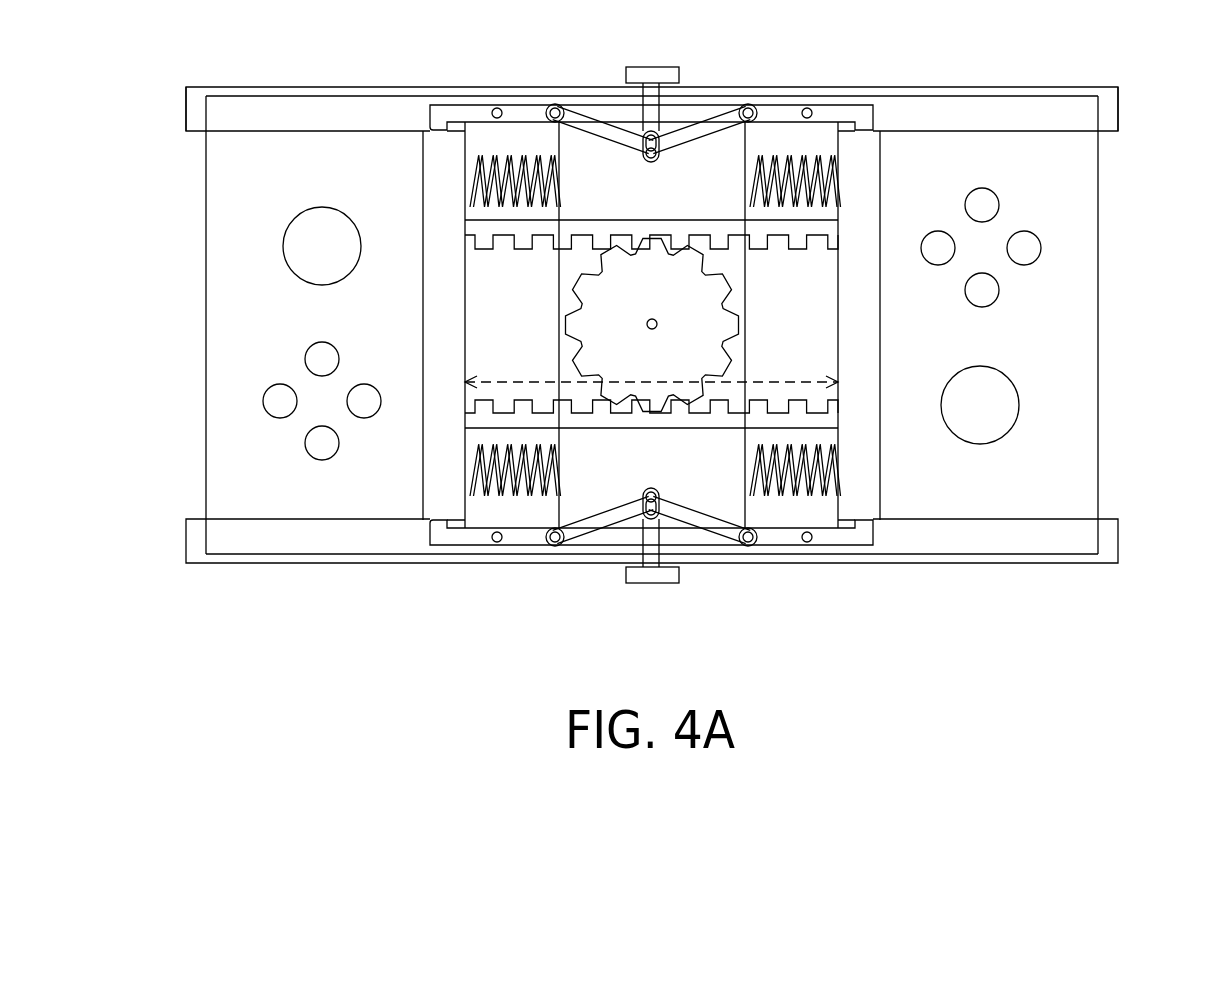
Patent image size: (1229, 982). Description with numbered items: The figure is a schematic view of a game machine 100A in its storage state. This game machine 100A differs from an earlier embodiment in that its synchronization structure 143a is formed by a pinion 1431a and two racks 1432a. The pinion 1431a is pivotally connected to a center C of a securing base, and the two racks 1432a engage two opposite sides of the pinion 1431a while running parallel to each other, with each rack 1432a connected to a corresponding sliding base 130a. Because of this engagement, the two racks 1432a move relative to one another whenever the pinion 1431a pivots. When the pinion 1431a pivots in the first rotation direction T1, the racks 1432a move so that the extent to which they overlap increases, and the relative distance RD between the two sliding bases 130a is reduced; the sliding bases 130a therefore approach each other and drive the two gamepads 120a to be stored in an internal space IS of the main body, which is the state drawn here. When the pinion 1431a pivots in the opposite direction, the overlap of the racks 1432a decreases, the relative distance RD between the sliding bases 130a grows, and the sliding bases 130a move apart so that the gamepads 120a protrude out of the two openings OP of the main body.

The game machine 100A is at (1228, 647).
The gamepad 120a is at (276, 483).
The sliding base 130a is at (447, 155).
The synchronization structure 143a is at (625, 441).
The pinion 1431a is at (625, 421).
The rack 1432a is at (546, 418).
The internal space IS is at (518, 142).
The relative distance RD is at (762, 383).
The center C is at (648, 328).
The first rotation direction T1 is at (757, 270).
The opening OP is at (188, 182).